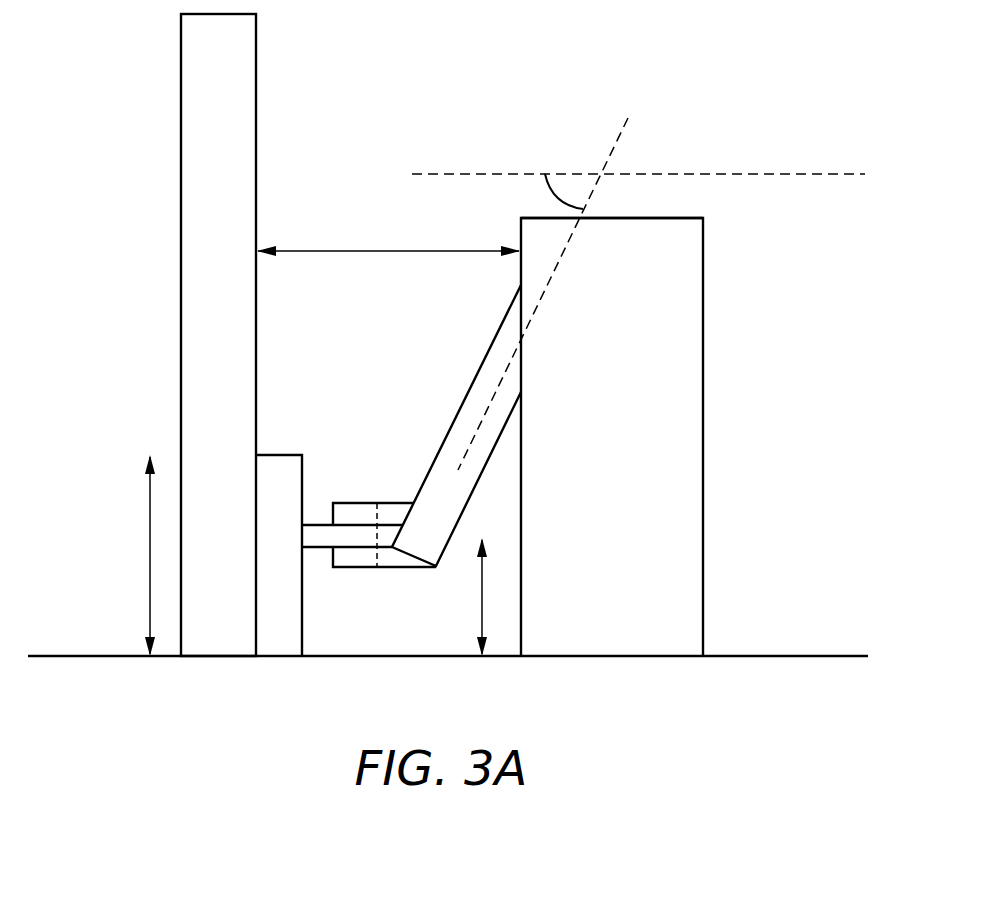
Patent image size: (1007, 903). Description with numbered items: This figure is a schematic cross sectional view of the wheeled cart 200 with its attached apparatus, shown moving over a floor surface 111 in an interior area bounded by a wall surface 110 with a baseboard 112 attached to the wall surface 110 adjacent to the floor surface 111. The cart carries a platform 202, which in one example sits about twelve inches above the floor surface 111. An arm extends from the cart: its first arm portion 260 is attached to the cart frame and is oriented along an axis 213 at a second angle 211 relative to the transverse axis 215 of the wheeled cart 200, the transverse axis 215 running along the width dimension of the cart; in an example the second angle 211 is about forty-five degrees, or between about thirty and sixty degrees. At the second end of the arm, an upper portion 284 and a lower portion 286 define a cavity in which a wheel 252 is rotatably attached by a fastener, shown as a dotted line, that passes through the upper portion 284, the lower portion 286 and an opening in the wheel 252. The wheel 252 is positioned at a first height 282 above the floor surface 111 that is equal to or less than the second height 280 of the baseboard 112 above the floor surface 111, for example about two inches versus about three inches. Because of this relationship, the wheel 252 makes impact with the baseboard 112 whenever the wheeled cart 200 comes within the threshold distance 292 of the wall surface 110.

The wall surface 110 is at (218, 335).
The floor surface 111 is at (793, 657).
The baseboard 112 is at (279, 555).
The wheeled cart 200 is at (612, 437).
The platform 202 is at (615, 220).
The second angle 211 is at (556, 193).
The axis 213 is at (622, 130).
The transverse axis 215 is at (792, 177).
The wheel 252 is at (304, 525).
The first arm portion 260 is at (470, 383).
The second height 280 is at (149, 555).
The first height 282 is at (480, 601).
The upper portion 284 is at (393, 503).
The lower portion 286 is at (350, 568).
The threshold distance 292 is at (335, 246).